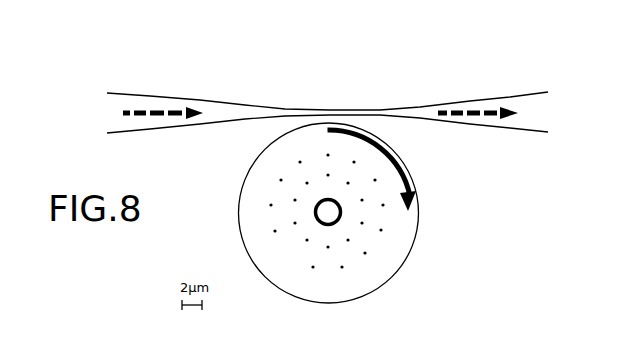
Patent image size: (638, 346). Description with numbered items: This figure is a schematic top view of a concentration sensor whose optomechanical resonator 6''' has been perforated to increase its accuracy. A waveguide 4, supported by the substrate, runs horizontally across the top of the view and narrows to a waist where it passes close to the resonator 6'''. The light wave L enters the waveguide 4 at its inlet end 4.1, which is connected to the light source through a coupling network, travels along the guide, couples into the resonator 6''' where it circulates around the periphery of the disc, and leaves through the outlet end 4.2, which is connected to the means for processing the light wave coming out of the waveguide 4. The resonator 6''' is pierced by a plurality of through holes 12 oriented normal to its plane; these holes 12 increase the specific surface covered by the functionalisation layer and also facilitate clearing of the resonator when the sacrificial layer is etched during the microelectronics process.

The waveguide 4 is at (334, 92).
The inlet end 4.1 is at (133, 92).
The outlet end 4.2 is at (525, 92).
The optomechanical resonator 6''' is at (380, 213).
The through holes 12 is at (290, 253).
The light wave L is at (403, 162).